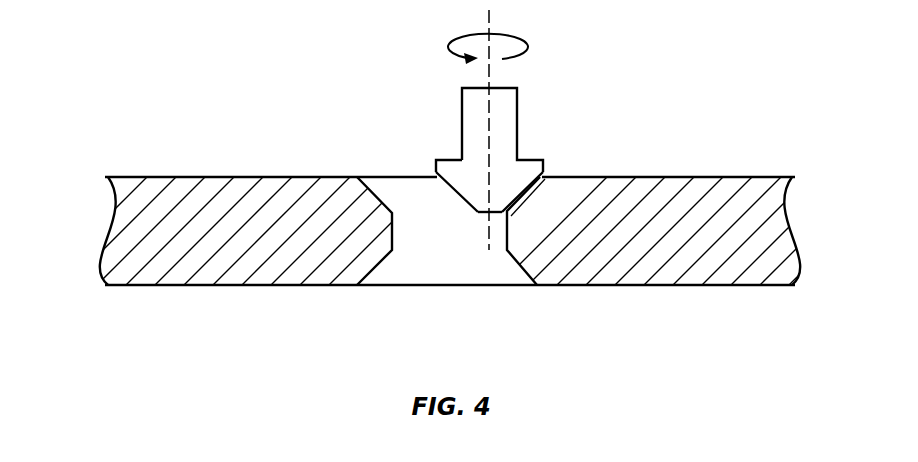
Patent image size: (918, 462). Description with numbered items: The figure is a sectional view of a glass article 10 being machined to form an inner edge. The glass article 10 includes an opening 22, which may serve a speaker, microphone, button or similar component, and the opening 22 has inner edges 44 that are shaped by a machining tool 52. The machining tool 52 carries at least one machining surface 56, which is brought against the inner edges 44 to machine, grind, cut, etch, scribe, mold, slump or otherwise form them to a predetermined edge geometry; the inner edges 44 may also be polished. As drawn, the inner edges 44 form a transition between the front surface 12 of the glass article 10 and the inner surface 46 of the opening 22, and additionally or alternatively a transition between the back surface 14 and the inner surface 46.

The glass article 10 is at (112, 100).
The front surface 12 is at (707, 177).
The back surface 14 is at (667, 286).
The opening 22 is at (443, 268).
The inner edges 44 is at (537, 189).
The inner surface 46 is at (503, 221).
The machining tool 52 is at (489, 167).
The machining surface 56 is at (460, 200).